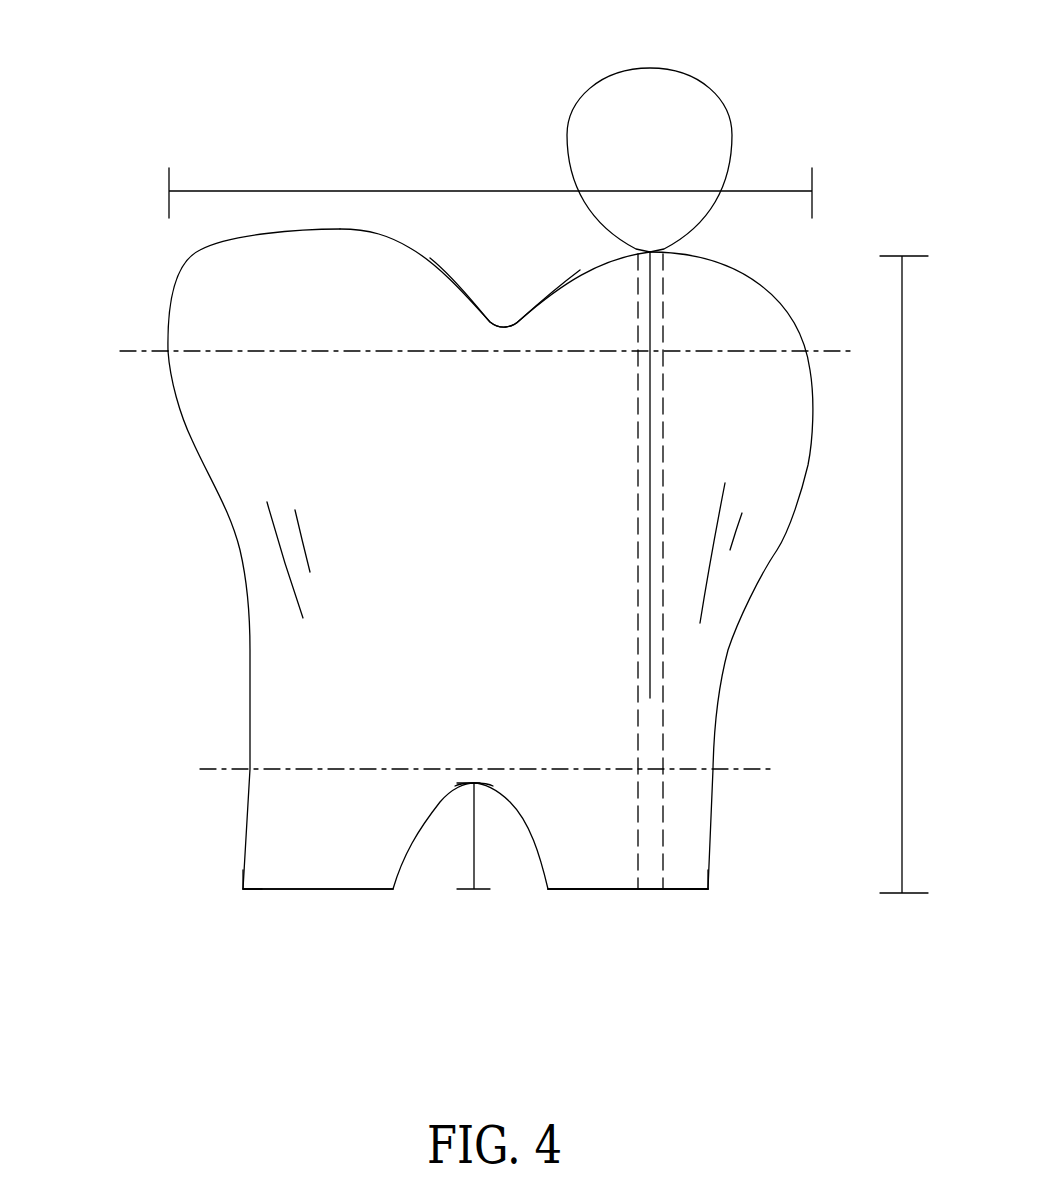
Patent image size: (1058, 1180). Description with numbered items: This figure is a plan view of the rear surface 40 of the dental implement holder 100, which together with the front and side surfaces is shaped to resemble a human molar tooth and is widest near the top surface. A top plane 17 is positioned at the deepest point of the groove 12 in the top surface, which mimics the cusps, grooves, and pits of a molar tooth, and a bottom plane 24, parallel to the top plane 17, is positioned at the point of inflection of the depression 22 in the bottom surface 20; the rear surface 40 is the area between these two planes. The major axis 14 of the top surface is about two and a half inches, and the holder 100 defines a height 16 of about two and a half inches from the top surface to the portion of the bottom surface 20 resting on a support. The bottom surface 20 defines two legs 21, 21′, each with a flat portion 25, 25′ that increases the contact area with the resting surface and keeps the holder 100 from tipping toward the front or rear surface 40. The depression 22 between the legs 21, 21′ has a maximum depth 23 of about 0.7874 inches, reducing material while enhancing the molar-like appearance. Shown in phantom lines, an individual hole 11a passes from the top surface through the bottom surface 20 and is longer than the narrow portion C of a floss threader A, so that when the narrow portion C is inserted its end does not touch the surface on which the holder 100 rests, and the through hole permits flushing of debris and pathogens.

The dental implement holder 100 is at (112, 428).
The floss threader A is at (722, 95).
The major axis 14 is at (432, 188).
The height 16 is at (903, 585).
The groove 12 is at (507, 298).
The individual hole 11a is at (663, 317).
The narrow portion C is at (651, 632).
The top plane 17 is at (142, 351).
The bottom plane 24 is at (226, 769).
The rear surface 40 is at (315, 457).
The maximum depth 23 is at (470, 839).
The depression 22 is at (486, 800).
The leg 21 is at (302, 907).
The bottom surface 20 is at (570, 925).
The leg 21′ is at (676, 903).
The flat portion 25 is at (258, 892).
The flat portion 25′ is at (690, 891).